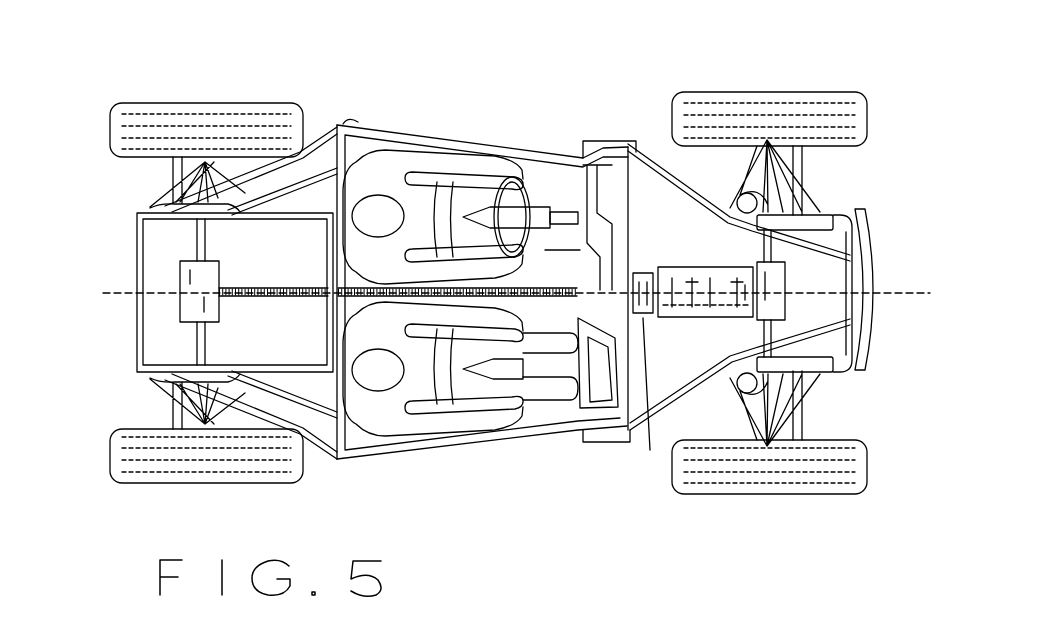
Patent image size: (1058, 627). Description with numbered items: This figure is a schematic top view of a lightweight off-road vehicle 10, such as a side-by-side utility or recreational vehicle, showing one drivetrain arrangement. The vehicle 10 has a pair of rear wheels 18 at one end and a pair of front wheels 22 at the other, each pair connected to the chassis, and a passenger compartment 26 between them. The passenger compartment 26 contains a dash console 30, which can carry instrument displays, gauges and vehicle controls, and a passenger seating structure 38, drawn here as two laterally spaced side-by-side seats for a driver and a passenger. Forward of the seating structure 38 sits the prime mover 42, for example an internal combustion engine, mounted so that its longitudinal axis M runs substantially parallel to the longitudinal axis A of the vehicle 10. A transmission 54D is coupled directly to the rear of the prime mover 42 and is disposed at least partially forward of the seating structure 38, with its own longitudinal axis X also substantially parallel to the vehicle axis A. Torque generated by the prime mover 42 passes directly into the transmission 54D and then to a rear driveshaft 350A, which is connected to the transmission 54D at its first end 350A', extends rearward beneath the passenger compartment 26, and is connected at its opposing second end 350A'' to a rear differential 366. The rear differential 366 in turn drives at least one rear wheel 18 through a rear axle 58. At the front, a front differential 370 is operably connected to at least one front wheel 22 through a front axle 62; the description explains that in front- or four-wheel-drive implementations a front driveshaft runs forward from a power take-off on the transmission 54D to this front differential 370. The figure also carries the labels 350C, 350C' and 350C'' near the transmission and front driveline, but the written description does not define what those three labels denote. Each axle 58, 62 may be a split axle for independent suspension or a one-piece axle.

The off-road vehicle 10 is at (488, 53).
The rear wheels 18 is at (192, 120).
The front wheels 22 is at (752, 112).
The passenger compartment 26 is at (478, 452).
The dash console 30 is at (620, 163).
The passenger seating structure 38 is at (365, 172).
The prime mover 42 is at (700, 277).
The transmission 54D is at (650, 450).
The rear axle 58 is at (202, 188).
The front axle 62 is at (783, 197).
The rear driveshaft 350A is at (235, 292).
The first end of rear drive shaft 350A' is at (404, 191).
The second end of rear drive shaft 350A'' is at (138, 292).
The gear 350C is at (670, 432).
The gear 350C' is at (647, 409).
The gear 350C'' is at (748, 417).
The rear differential 366 is at (189, 313).
The front differential 370 is at (776, 276).
The longitudinal axis of the vehicle A is at (515, 293).
The longitudinal axis of the transmission X is at (643, 273).
The longitudinal axis of the prime mover M is at (727, 287).